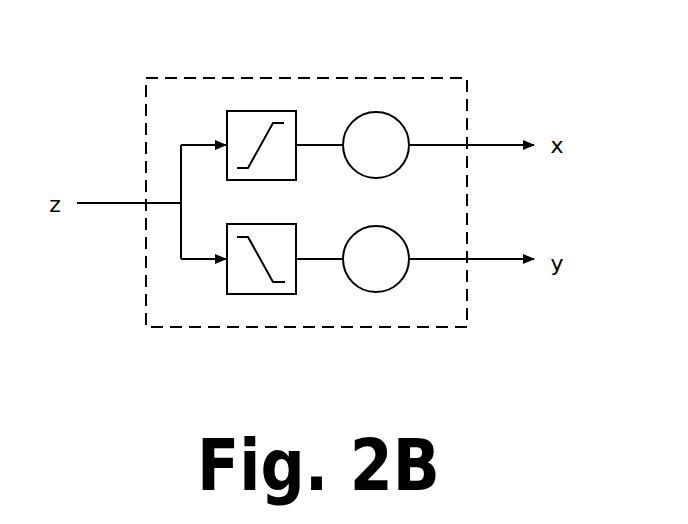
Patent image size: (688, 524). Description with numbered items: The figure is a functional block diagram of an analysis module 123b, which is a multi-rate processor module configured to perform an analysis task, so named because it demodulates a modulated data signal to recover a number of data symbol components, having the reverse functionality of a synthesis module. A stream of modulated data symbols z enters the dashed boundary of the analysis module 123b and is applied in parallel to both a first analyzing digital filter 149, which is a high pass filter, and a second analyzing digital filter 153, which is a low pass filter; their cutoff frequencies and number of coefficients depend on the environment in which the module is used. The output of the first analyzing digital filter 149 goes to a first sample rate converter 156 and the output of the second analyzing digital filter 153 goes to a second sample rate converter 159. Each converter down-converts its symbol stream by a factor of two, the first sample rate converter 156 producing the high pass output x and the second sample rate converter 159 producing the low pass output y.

The analysis module 123b is at (410, 76).
The first analyzing digital filter 149 is at (261, 109).
The second analyzing digital filter 153 is at (261, 296).
The first sample rate converter 156 is at (376, 180).
The second sample rate converter 159 is at (377, 294).